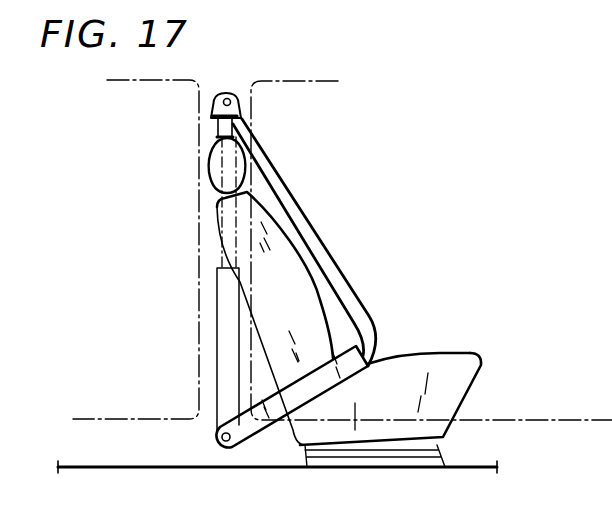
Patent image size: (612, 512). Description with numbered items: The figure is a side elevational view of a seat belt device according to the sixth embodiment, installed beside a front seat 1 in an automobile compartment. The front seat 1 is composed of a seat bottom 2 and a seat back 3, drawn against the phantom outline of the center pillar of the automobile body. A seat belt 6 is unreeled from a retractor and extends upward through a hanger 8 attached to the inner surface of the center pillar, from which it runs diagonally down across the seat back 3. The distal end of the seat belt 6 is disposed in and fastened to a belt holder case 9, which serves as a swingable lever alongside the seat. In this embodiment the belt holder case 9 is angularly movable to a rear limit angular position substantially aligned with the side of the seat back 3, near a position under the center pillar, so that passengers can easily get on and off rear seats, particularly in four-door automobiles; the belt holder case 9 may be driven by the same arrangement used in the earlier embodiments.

The front seat 1 is at (426, 360).
The seat bottom 2 is at (458, 362).
The seat back 3 is at (297, 272).
The seat belt 6 is at (297, 202).
The hanger 8 is at (240, 104).
The belt holder case 9 is at (226, 359).